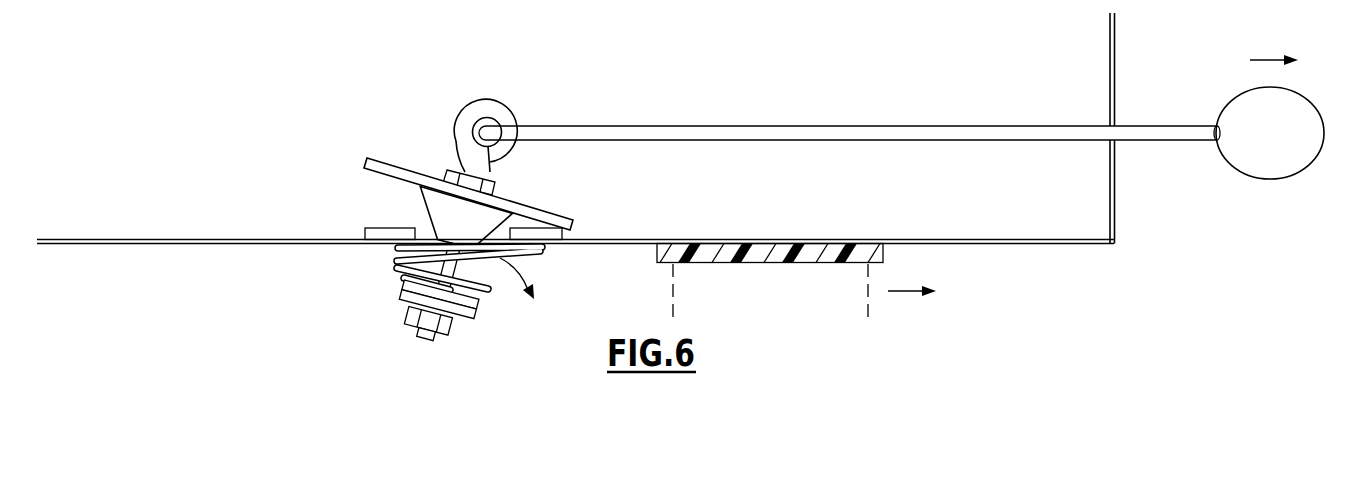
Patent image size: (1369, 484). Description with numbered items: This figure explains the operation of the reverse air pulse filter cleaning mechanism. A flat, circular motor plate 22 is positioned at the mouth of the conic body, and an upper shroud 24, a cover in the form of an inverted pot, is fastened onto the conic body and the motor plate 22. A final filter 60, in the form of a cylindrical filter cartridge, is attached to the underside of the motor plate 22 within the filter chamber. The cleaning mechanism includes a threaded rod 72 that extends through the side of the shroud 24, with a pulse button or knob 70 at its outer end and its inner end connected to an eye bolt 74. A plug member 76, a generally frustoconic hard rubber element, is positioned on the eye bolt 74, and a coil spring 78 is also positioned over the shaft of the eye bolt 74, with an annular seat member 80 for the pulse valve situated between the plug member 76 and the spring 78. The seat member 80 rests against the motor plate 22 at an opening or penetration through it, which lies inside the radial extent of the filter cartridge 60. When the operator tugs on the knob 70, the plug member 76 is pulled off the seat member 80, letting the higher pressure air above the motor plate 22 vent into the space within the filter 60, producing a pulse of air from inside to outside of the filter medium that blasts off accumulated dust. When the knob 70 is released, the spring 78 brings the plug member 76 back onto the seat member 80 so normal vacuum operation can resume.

The motor plate 22 is at (233, 238).
The upper shroud 24 is at (1115, 33).
The final filter 60 is at (837, 296).
The pulse button or knob 70 is at (1310, 100).
The threaded rod 72 is at (817, 125).
The eye bolt 74 is at (501, 101).
The plug member 76 is at (468, 231).
The coil spring 78 is at (483, 293).
The annular seat member 80 is at (380, 228).